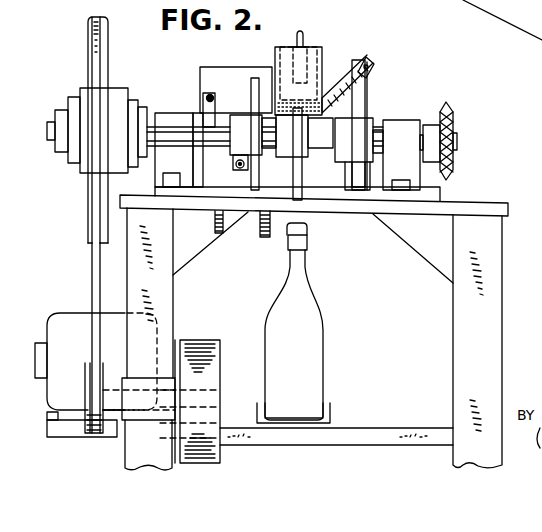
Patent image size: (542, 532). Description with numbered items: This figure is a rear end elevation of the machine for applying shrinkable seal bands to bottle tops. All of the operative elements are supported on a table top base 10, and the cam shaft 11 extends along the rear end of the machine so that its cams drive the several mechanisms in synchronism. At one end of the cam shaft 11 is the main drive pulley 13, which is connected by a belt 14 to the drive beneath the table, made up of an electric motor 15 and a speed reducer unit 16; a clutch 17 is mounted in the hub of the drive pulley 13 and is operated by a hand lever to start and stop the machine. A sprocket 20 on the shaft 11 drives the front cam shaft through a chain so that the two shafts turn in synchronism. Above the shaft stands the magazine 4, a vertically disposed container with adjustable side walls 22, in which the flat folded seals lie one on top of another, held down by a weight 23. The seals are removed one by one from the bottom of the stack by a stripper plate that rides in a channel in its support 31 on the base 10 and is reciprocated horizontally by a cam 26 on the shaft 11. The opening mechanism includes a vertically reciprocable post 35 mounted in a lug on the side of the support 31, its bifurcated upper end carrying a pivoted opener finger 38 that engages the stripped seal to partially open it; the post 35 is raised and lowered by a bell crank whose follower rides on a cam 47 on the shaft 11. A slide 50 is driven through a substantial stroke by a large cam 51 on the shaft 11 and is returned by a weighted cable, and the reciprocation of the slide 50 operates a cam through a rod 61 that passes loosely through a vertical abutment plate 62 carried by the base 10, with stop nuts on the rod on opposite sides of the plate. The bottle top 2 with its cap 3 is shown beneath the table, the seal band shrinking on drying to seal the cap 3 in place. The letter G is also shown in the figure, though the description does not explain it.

The bottle top 2 is at (306, 252).
The cap 3 is at (309, 231).
The magazine 4 is at (325, 45).
The table top base 10 is at (492, 204).
The cam shaft 11 is at (210, 148).
The main drive pulley 13 is at (112, 66).
The belt 14 is at (90, 258).
The electric motor 15 is at (68, 313).
The speed reducer unit 16 is at (202, 342).
The clutch 17 is at (135, 107).
The sprocket 20 is at (457, 117).
The adjustable side walls 22 is at (283, 62).
The weight 23 is at (300, 47).
The cam 26 is at (291, 167).
The support 31 is at (330, 183).
The post 35 is at (368, 97).
The opener finger 38 is at (345, 76).
The cam 47 is at (363, 148).
The slide 50 is at (222, 113).
The large cam 51 is at (252, 164).
The rod 61 is at (203, 100).
The abutment plate 62 is at (208, 95).
The gate G is at (376, 79).